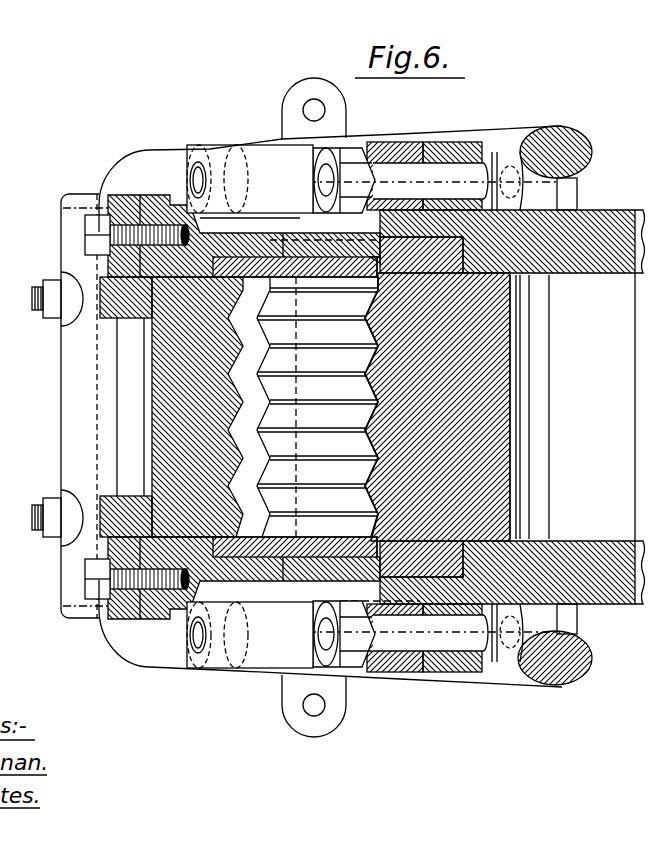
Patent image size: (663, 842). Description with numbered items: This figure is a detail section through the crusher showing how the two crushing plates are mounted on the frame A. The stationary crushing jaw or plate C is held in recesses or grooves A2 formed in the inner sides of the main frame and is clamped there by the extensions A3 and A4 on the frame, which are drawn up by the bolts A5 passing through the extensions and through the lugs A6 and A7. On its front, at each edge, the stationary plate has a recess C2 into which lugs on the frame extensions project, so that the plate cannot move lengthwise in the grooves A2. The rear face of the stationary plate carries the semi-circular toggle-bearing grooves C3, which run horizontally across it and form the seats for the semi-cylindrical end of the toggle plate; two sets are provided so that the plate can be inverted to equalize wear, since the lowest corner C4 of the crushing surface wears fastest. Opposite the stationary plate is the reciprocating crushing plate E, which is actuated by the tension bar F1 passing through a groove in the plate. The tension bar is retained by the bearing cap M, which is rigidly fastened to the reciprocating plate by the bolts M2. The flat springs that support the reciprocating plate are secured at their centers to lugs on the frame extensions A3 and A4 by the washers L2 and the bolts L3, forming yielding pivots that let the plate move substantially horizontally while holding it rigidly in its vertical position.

The frame A is at (512, 407).
The recesses or grooves A2 is at (425, 255).
The extension A3 is at (128, 640).
The extension A4 is at (252, 218).
The bolts A5 is at (380, 407).
The lug A6 is at (457, 148).
The lug A7 is at (400, 150).
The stationary crushing jaw or plate C is at (514, 431).
The recess C2 is at (0, 383).
The toggle-bearing grooves C3 is at (513, 420).
The lowest corner C4 is at (255, 443).
The reciprocating crushing plate E is at (197, 407).
The tension bar F1 is at (121, 170).
The washers L2 is at (113, 205).
The bolts L3 is at (100, 232).
The bearing caps M is at (75, 404).
The bolts M2 is at (33, 300).